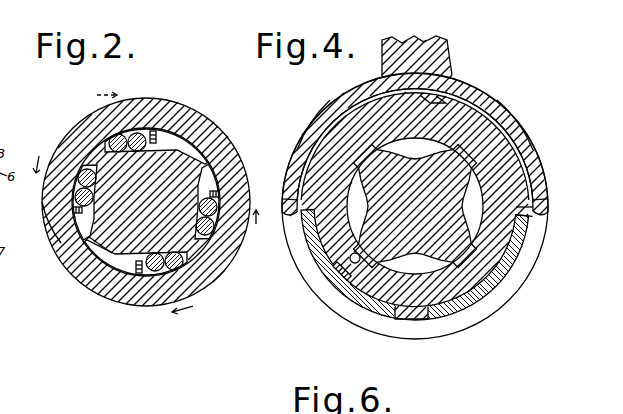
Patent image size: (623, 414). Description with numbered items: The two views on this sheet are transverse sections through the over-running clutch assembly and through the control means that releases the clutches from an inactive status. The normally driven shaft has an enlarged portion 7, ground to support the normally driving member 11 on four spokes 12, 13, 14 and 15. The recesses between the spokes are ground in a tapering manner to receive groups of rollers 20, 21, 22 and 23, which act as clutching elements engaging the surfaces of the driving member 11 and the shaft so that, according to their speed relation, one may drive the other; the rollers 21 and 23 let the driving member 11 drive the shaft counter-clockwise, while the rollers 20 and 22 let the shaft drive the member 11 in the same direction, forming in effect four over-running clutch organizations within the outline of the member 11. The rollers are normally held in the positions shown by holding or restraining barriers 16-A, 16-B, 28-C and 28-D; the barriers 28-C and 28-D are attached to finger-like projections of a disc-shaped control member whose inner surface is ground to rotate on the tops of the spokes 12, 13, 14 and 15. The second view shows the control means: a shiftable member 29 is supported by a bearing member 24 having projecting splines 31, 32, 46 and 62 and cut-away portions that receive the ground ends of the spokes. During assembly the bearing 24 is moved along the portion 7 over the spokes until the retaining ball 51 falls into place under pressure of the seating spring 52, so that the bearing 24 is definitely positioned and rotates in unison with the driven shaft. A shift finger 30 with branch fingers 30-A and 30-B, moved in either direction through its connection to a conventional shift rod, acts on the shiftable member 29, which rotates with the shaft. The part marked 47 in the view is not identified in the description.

In FIG. 2, the enlarged portion 7 is at (70, 238).
In FIG. 4, the enlarged portion 7 is at (513, 257).
In FIG. 2, the normally driving member 11 is at (208, 128).
In FIG. 2, the spoke 12 is at (100, 255).
In FIG. 2, the spoke 13 is at (178, 265).
In FIG. 2, the spoke 14 is at (230, 147).
In FIG. 2, the spoke 15 is at (100, 157).
In FIG. 2, the holding or restraining barrier 16-A is at (158, 132).
In FIG. 2, the holding or restraining barrier 16-B is at (137, 274).
In FIG. 2, the roller 20 is at (159, 272).
In FIG. 2, the roller 21 is at (76, 194).
In FIG. 2, the roller 22 is at (136, 134).
In FIG. 2, the roller 23 is at (220, 197).
In FIG. 4, the bearing member 24 is at (468, 284).
In FIG. 2, the barrier 28-C is at (74, 210).
In FIG. 2, the barrier 28-D is at (220, 180).
In FIG. 4, the shiftable member 29 is at (453, 203).
In FIG. 4, the shift finger 30 is at (438, 62).
In FIG. 4, the branch finger 30-A is at (320, 113).
In FIG. 4, the branch finger 30-B is at (482, 97).
In FIG. 4, the projecting spline 31 is at (428, 95).
In FIG. 4, the projecting spline 32 is at (404, 319).
In FIG. 4, the projecting spline 46 is at (297, 210).
In FIG. 4, the rotor 47 is at (291, 222).
In FIG. 4, the retaining ball 51 is at (349, 262).
In FIG. 4, the seating spring 52 is at (335, 281).
In FIG. 4, the projecting spline 62 is at (525, 220).